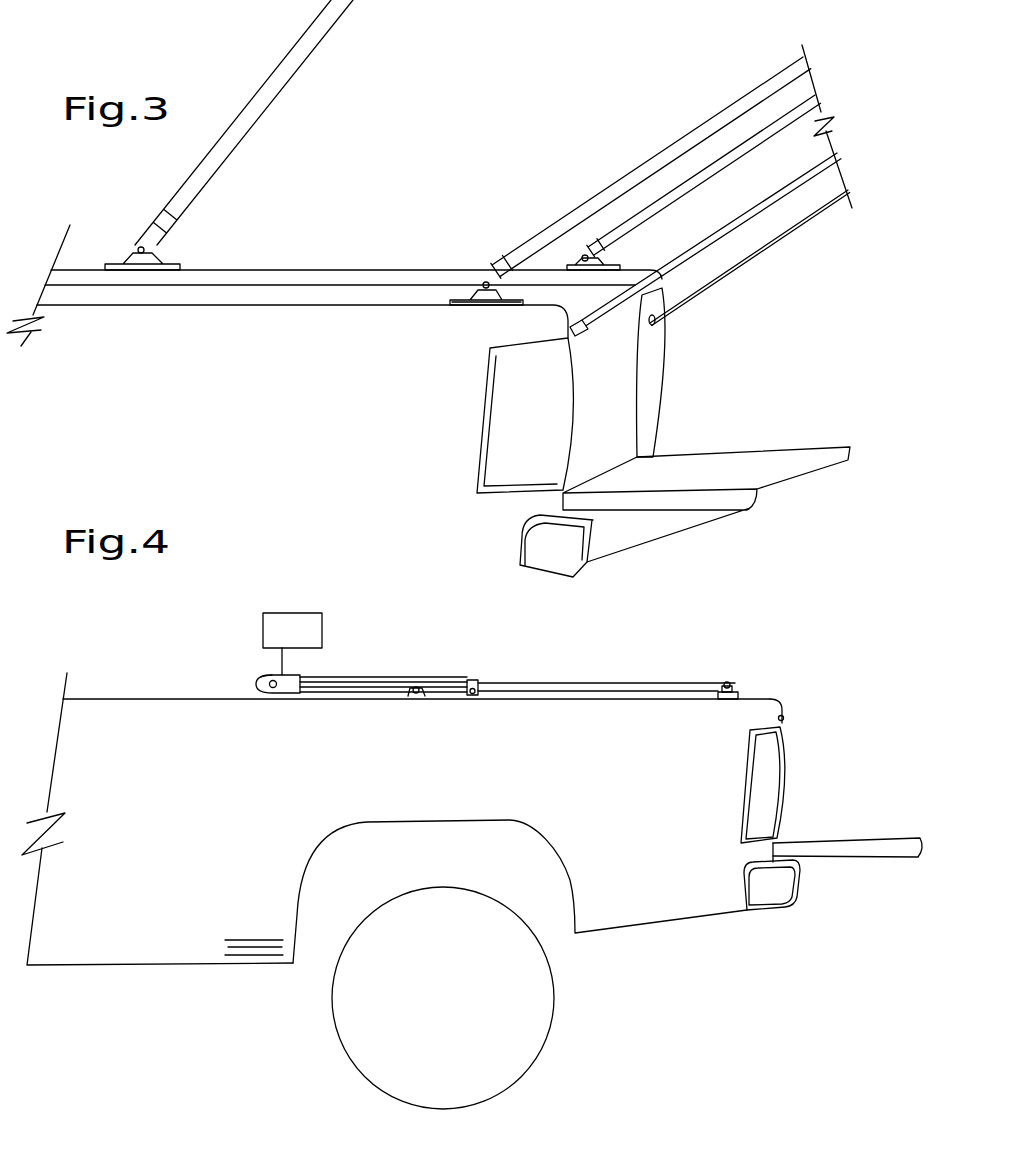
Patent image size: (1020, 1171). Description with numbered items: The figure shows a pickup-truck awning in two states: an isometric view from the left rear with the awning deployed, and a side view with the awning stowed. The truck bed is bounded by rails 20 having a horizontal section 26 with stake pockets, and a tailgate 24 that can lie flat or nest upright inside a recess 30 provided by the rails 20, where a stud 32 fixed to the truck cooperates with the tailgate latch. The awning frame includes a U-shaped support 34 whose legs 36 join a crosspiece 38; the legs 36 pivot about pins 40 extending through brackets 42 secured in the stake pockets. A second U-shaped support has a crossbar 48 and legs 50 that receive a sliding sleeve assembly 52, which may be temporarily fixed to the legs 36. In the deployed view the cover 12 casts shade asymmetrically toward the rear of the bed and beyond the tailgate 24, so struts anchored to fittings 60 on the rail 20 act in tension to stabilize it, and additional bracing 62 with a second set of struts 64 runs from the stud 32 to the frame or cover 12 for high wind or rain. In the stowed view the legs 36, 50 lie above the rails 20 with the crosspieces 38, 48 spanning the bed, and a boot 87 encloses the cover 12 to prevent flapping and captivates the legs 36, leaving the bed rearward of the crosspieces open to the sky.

In FIG. 4, the cover 12 is at (247, 680).
In FIG. 4, the rails 20 is at (112, 698).
In FIG. 3, the tailgate 24 is at (825, 441).
In FIG. 4, the tailgate 24 is at (898, 834).
In FIG. 4, the horizontal section 26 is at (147, 700).
In FIG. 3, the recess 30 is at (658, 378).
In FIG. 3, the stud 32 is at (640, 320).
In FIG. 4, the U-shaped support 34 is at (633, 680).
In FIG. 3, the legs 36 is at (714, 120).
In FIG. 4, the legs 36 is at (565, 682).
In FIG. 4, the crossbar or crosspiece 38 is at (262, 665).
In FIG. 3, the pins 40 is at (487, 303).
In FIG. 3, the brackets 42 is at (442, 293).
In FIG. 4, the brackets 42 is at (742, 686).
In FIG. 4, the crossbar 48 is at (280, 705).
In FIG. 3, the legs 50 is at (330, 26).
In FIG. 4, the legs 50 is at (362, 703).
In FIG. 4, the sliding sleeve assembly 52 is at (474, 678).
In FIG. 3, the fittings 60 is at (192, 238).
In FIG. 3, the bracing 62 is at (823, 228).
In FIG. 3, the struts 64 is at (768, 257).
In FIG. 4, the boot 87 is at (292, 644).